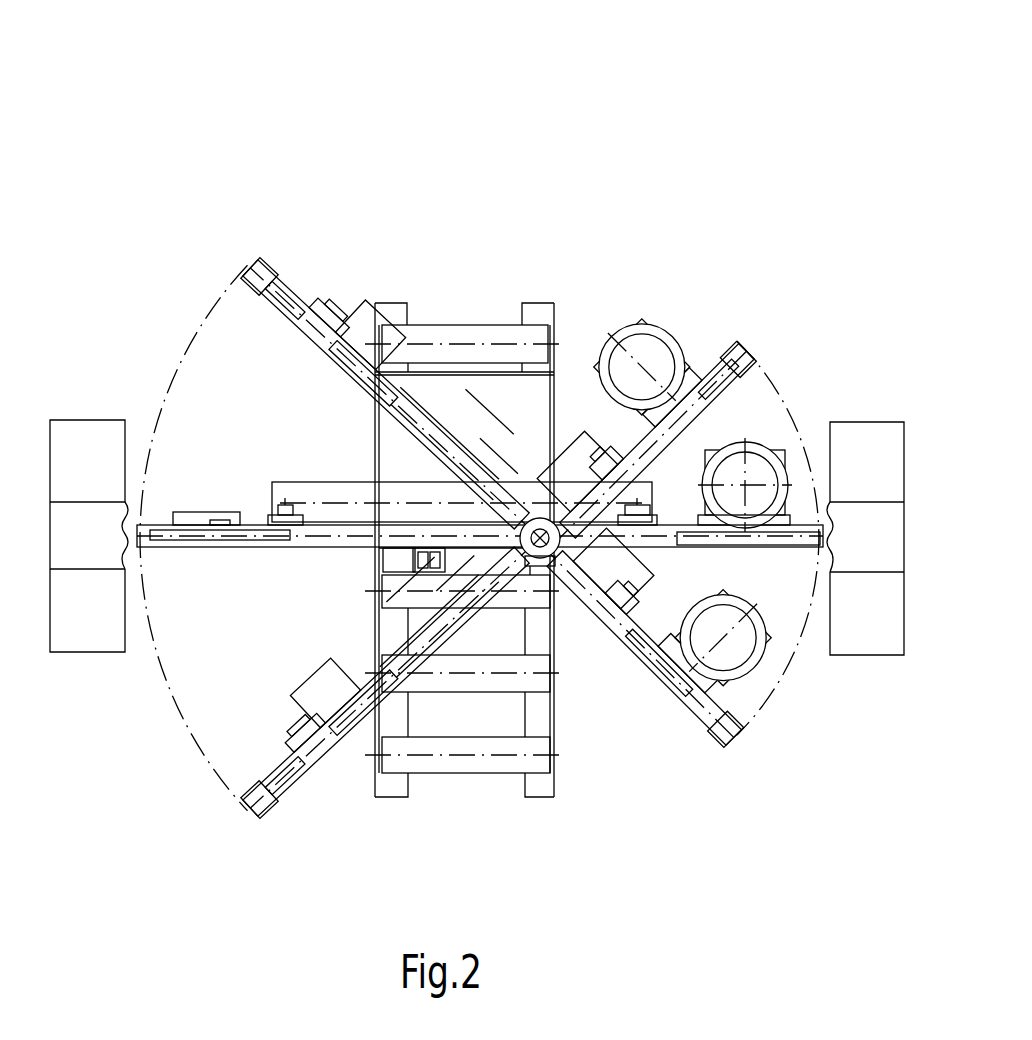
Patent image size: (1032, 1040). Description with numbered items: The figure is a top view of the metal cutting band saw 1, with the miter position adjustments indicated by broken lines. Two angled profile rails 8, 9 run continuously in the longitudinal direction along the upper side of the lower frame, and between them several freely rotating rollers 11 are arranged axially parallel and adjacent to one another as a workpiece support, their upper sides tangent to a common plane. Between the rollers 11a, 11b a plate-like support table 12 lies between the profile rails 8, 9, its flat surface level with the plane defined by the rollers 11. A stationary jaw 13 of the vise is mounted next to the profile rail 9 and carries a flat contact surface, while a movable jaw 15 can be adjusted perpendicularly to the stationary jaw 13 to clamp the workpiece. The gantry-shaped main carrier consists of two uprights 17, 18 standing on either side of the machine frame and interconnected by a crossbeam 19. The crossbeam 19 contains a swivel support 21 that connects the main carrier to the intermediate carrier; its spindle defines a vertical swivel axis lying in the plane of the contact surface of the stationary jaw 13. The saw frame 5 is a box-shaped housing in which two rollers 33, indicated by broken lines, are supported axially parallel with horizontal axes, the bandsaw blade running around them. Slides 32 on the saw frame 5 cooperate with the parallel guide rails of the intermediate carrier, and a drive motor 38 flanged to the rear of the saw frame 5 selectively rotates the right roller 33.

The metal cutting band saw 1 is at (710, 98).
The saw frame 5 is at (223, 300).
The angled profile rail 8 is at (396, 783).
The angled profile rail 9 is at (550, 790).
The rollers 11 is at (482, 763).
The roller 11a is at (452, 332).
The roller 11b is at (380, 580).
The support table 12 is at (400, 442).
The stationary jaw 13 is at (560, 585).
The movable jaw 15 is at (405, 558).
The upright 17 is at (858, 440).
The upright 18 is at (88, 428).
The crossbeam 19 is at (70, 542).
The swivel support 21 is at (555, 507).
The slides 32 is at (283, 512).
The rollers 33 is at (178, 548).
The drive motor 38 is at (755, 478).